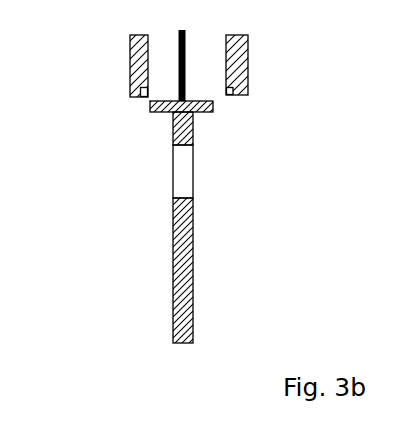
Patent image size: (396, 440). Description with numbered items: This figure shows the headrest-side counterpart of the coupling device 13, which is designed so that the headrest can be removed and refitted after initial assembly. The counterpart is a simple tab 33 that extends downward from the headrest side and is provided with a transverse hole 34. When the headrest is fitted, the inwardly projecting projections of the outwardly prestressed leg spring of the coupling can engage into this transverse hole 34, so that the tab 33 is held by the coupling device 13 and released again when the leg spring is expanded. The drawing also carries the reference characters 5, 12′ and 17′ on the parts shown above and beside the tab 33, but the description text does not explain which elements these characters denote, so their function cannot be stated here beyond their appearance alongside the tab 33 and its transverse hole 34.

The holder / guide blocks 5 is at (235, 47).
The wire / rod 12′ is at (190, 62).
The plate 17′ is at (183, 100).
The coupling device 13 is at (176, 211).
The transverse hole 34 is at (182, 177).
The tab 33 is at (178, 280).